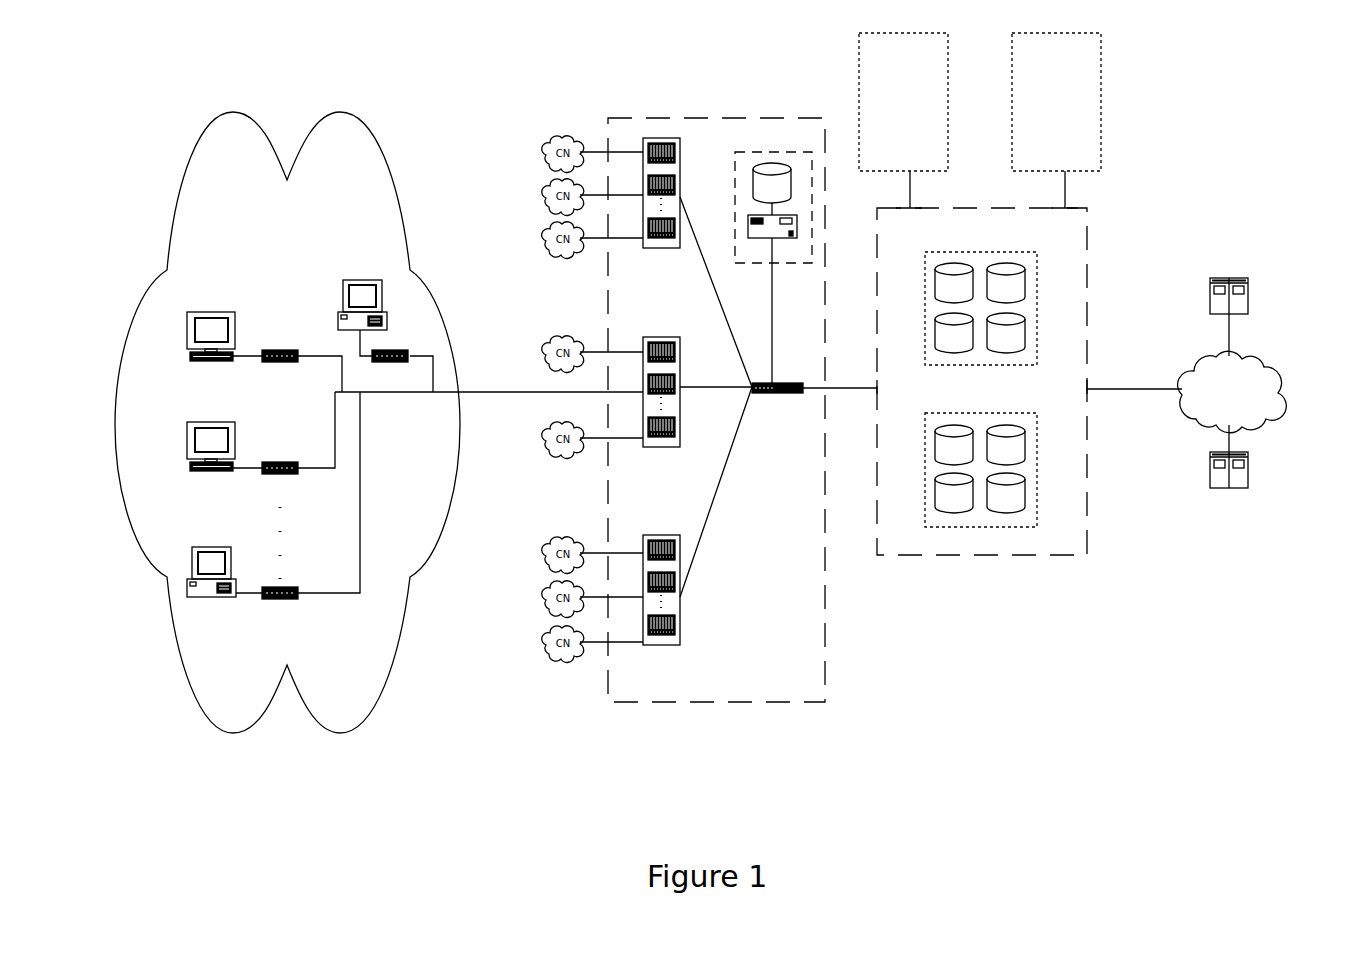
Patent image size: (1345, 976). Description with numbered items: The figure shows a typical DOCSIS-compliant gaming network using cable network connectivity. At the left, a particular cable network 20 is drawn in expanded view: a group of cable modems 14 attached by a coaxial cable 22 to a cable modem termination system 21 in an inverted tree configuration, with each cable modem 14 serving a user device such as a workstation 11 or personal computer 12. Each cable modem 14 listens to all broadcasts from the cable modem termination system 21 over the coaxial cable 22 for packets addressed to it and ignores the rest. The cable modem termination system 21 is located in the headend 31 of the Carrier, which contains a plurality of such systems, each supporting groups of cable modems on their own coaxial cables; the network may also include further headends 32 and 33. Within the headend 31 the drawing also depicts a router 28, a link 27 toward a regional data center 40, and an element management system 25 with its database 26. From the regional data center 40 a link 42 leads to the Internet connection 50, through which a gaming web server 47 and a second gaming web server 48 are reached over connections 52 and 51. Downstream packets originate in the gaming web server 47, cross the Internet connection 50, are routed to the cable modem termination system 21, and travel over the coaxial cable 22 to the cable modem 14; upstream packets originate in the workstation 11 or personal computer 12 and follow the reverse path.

The cable network 20 is at (385, 180).
The workstation 11 is at (187, 332).
The personal computer 12 is at (341, 304).
The cable modem 14 is at (280, 350).
The cable modem termination system 21 is at (648, 139).
The coaxial cable 22 is at (630, 239).
The element management system 25 is at (800, 241).
The EMS database 26 is at (772, 163).
The link to regional data center 27 is at (833, 386).
The router 28 is at (798, 395).
The headend 31 is at (716, 410).
The headend 32 is at (903, 120).
The headend 33 is at (1056, 120).
The regional data center 40 is at (982, 381).
The link to Internet 42 is at (1108, 388).
The gaming web server 47 is at (1248, 290).
The gaming web server 48 is at (1248, 463).
The Internet connection 50 is at (1232, 392).
The gaming web server 51 is at (1229, 444).
The link 52 is at (1229, 336).